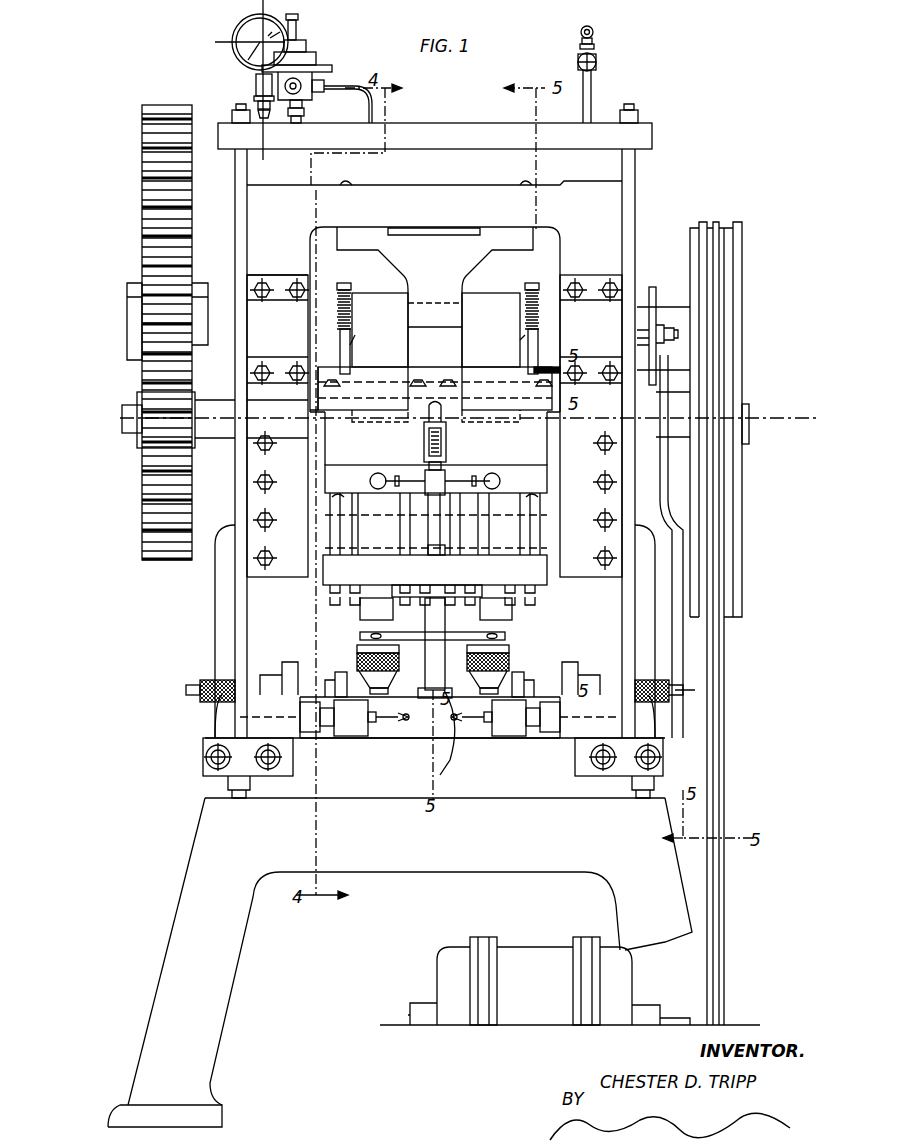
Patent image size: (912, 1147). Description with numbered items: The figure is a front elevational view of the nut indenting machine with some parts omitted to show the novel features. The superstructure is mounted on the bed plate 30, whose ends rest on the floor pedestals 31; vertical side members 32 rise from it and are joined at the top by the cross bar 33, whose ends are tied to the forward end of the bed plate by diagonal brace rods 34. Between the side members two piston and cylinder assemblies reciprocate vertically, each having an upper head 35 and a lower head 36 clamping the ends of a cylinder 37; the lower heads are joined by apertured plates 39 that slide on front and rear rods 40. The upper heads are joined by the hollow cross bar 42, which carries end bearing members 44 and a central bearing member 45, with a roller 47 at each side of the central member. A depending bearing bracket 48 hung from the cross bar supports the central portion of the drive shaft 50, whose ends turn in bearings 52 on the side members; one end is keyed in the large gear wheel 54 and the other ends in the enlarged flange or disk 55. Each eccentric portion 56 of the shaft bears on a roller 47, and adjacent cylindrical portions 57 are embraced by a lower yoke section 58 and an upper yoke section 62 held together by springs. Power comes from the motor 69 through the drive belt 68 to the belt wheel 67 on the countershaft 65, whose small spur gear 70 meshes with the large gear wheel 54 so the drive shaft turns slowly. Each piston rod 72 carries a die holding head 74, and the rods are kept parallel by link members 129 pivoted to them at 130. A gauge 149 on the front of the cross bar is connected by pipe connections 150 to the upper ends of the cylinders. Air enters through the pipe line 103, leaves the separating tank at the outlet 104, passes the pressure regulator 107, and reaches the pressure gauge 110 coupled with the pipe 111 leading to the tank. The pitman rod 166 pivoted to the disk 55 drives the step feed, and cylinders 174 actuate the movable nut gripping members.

The bed plate 30 is at (434, 768).
The floor pedestals 31 is at (400, 962).
The vertical side members 32 is at (433, 687).
The cross bar 33 is at (605, 160).
The diagonal brace rods 34 is at (636, 190).
The upper head 35 is at (333, 480).
The lower head 36 is at (435, 570).
The cylinder 37 is at (372, 492).
The apertured plates 39 is at (460, 593).
The front and rear rods 40 is at (458, 732).
The hollow cross bar 42 is at (435, 438).
The transverse bearing members 44 is at (322, 378).
The central bearing member 45 is at (442, 377).
The roller 47 is at (358, 378).
The depending bearing bracket 48 is at (435, 319).
The drive shaft 50 is at (125, 325).
The bearings 52 is at (272, 320).
The large gear wheel 54 is at (142, 204).
The flange or disk 55 is at (656, 292).
The eccentric portion 56 is at (372, 293).
The cylindrical portions 57 is at (322, 303).
The lower yoke section 58 is at (550, 382).
The upper yoke section 62 is at (352, 330).
The countershaft 65 is at (749, 418).
The belt wheel 67 is at (744, 245).
The drive belt 68 is at (724, 652).
The motor 69 is at (530, 970).
The spur gear 70 is at (140, 395).
The piston rod 72 is at (393, 614).
The die holding head 74 is at (357, 658).
The pipe line 103 is at (595, 32).
The outlet 104 is at (290, 123).
The pressure regulator 107 is at (305, 75).
The pressure gauge 110 is at (236, 34).
The pipe 111 is at (353, 80).
The link members 129 is at (415, 642).
The pivot 130 is at (370, 632).
The gauge 149 is at (424, 434).
The pipe connections 150 is at (412, 460).
The pitman rod 166 is at (660, 448).
The cylinders 174 is at (268, 697).